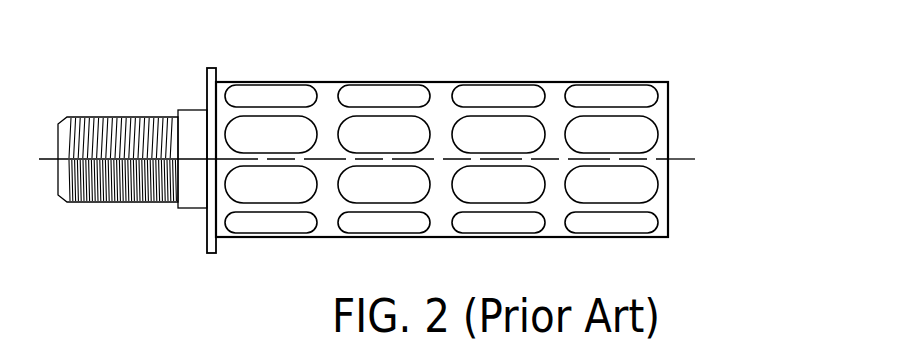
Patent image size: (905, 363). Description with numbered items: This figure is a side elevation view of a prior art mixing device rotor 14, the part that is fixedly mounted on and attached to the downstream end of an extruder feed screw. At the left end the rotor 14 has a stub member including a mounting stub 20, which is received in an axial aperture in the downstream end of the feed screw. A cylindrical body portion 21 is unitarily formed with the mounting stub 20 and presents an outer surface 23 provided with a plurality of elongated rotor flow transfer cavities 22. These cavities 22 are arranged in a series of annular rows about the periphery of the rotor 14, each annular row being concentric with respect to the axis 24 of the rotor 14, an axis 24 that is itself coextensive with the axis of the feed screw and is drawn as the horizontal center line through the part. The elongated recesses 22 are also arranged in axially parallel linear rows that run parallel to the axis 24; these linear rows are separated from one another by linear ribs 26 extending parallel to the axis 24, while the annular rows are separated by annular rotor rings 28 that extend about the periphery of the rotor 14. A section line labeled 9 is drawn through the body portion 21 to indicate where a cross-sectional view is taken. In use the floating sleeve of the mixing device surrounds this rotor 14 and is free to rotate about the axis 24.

The rotor 14 is at (702, 64).
The mounting stub 20 is at (150, 190).
The cylindrical body portion 21 is at (667, 115).
The rotor flow transfer cavities 22 is at (271, 225).
The outer surface 23 is at (328, 93).
The axis 24 is at (112, 156).
The linear ribs 26 is at (284, 112).
The annular rotor rings 28 is at (326, 237).
The section line 9 is at (377, 82).